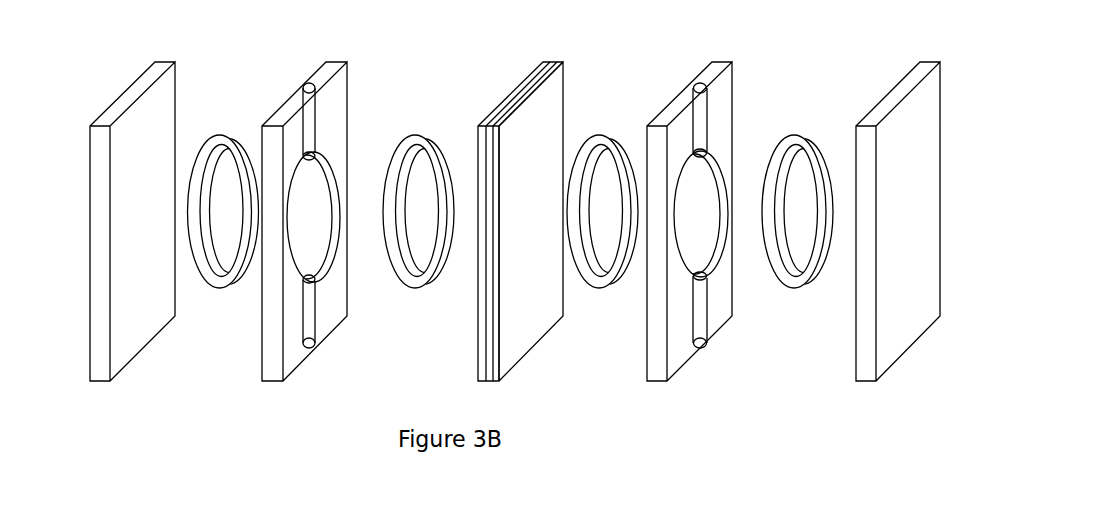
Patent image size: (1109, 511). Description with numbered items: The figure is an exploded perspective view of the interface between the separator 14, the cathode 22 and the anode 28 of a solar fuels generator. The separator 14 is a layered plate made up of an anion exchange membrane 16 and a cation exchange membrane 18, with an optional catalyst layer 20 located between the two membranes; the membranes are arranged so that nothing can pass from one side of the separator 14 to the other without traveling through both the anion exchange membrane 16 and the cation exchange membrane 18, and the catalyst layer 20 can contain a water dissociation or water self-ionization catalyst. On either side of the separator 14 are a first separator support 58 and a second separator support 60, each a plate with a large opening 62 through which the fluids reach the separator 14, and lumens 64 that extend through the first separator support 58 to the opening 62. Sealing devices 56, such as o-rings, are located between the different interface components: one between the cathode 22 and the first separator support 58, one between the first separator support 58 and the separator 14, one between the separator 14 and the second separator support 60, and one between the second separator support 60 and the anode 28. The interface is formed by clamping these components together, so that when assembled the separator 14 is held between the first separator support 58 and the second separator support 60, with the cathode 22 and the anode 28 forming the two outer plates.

The separator 14 is at (504, 213).
The anion exchange membrane 16 is at (552, 108).
The cation exchange membrane 18 is at (493, 112).
The catalyst layer 20 is at (490, 138).
The cathode 22 is at (99, 87).
The anode 28 is at (954, 86).
The sealing device 56 is at (221, 134).
The first separator support 58 is at (347, 62).
The second separator support 60 is at (731, 62).
The opening 62 is at (329, 162).
The lumens 64 is at (306, 128).